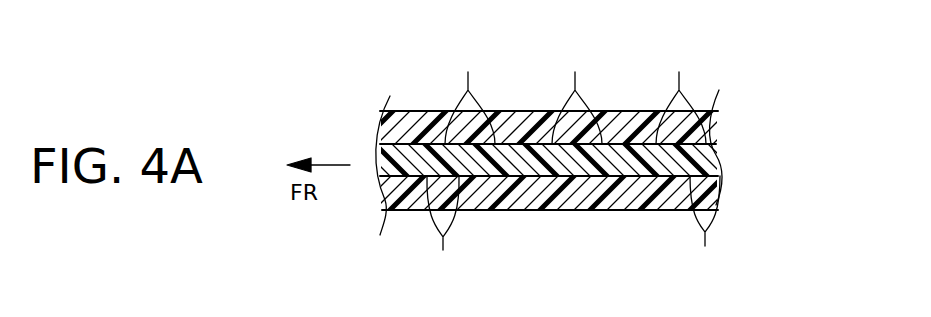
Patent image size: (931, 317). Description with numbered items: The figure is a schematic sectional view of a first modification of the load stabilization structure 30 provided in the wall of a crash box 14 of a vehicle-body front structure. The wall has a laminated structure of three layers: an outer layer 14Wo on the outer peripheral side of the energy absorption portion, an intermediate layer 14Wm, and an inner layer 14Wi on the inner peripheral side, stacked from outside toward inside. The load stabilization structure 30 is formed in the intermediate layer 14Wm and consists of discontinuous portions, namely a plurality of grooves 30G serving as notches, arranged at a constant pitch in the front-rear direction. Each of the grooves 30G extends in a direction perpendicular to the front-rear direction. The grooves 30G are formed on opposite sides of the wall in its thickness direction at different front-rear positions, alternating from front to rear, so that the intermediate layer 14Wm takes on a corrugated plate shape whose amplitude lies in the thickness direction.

The crash box 14 is at (745, 82).
The outer layer 14Wo is at (614, 111).
The intermediate layer 14Wm is at (534, 210).
The inner layer 14Wi is at (626, 210).
The load stabilization structure 30 is at (730, 160).
The grooves 30G is at (500, 67).